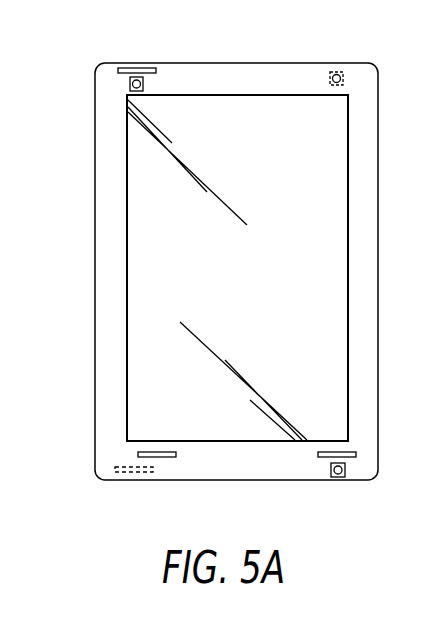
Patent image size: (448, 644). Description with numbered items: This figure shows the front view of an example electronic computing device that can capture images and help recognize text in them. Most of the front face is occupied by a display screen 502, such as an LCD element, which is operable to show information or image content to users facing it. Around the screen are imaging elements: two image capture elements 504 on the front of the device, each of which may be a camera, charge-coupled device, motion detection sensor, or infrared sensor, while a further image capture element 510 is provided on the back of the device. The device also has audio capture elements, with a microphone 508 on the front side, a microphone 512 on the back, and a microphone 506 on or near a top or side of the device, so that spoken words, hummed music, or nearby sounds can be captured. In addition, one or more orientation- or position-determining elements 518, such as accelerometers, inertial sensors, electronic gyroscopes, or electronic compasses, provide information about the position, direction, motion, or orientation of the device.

The display screen 502 is at (127, 321).
The image capture element 504 is at (130, 84).
The microphone 506 is at (146, 68).
The microphone 508 is at (357, 454).
The image capture element 510 is at (334, 71).
The microphone 512 is at (163, 458).
The orientation- or position-determining element 518 is at (134, 474).